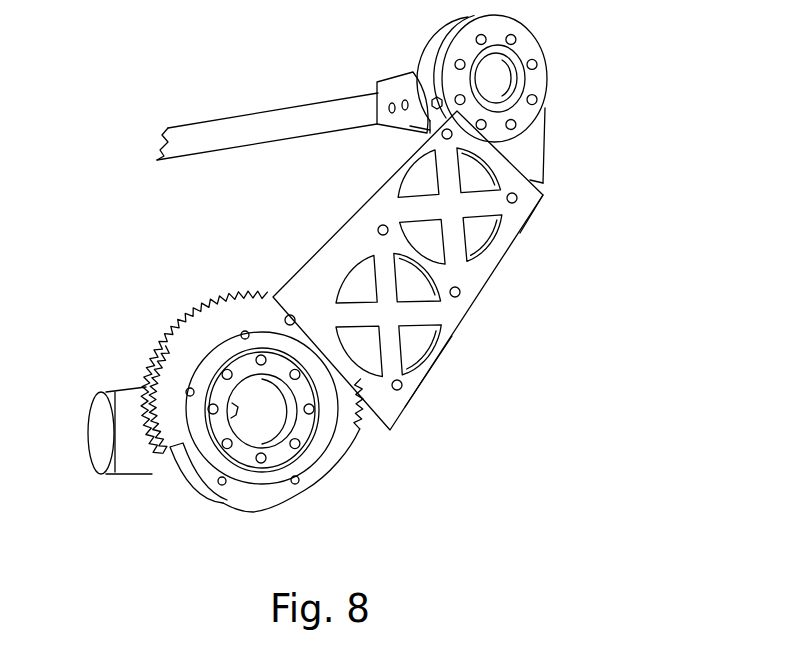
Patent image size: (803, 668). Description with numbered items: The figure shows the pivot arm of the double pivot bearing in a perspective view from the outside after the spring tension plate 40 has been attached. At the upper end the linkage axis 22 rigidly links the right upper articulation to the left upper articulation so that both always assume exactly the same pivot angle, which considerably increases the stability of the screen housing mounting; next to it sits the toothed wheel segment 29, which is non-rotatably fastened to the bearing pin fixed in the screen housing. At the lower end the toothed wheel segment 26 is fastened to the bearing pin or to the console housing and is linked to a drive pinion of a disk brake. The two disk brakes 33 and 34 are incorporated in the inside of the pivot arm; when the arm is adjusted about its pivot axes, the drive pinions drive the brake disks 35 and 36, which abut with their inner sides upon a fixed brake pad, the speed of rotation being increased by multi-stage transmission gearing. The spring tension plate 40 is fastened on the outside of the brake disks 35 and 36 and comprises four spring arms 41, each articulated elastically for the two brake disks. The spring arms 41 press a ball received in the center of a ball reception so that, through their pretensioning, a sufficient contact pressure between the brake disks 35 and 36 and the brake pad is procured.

The linkage axis 22 is at (255, 122).
The toothed wheel segment 26 is at (222, 317).
The toothed wheel segment 29 is at (530, 152).
The disk brake 33 is at (436, 398).
The disk brake 34 is at (544, 233).
The brake disk 35 is at (480, 233).
The brake disk 36 is at (418, 347).
The spring tension plate 40 is at (462, 295).
The spring arms 41 is at (387, 282).